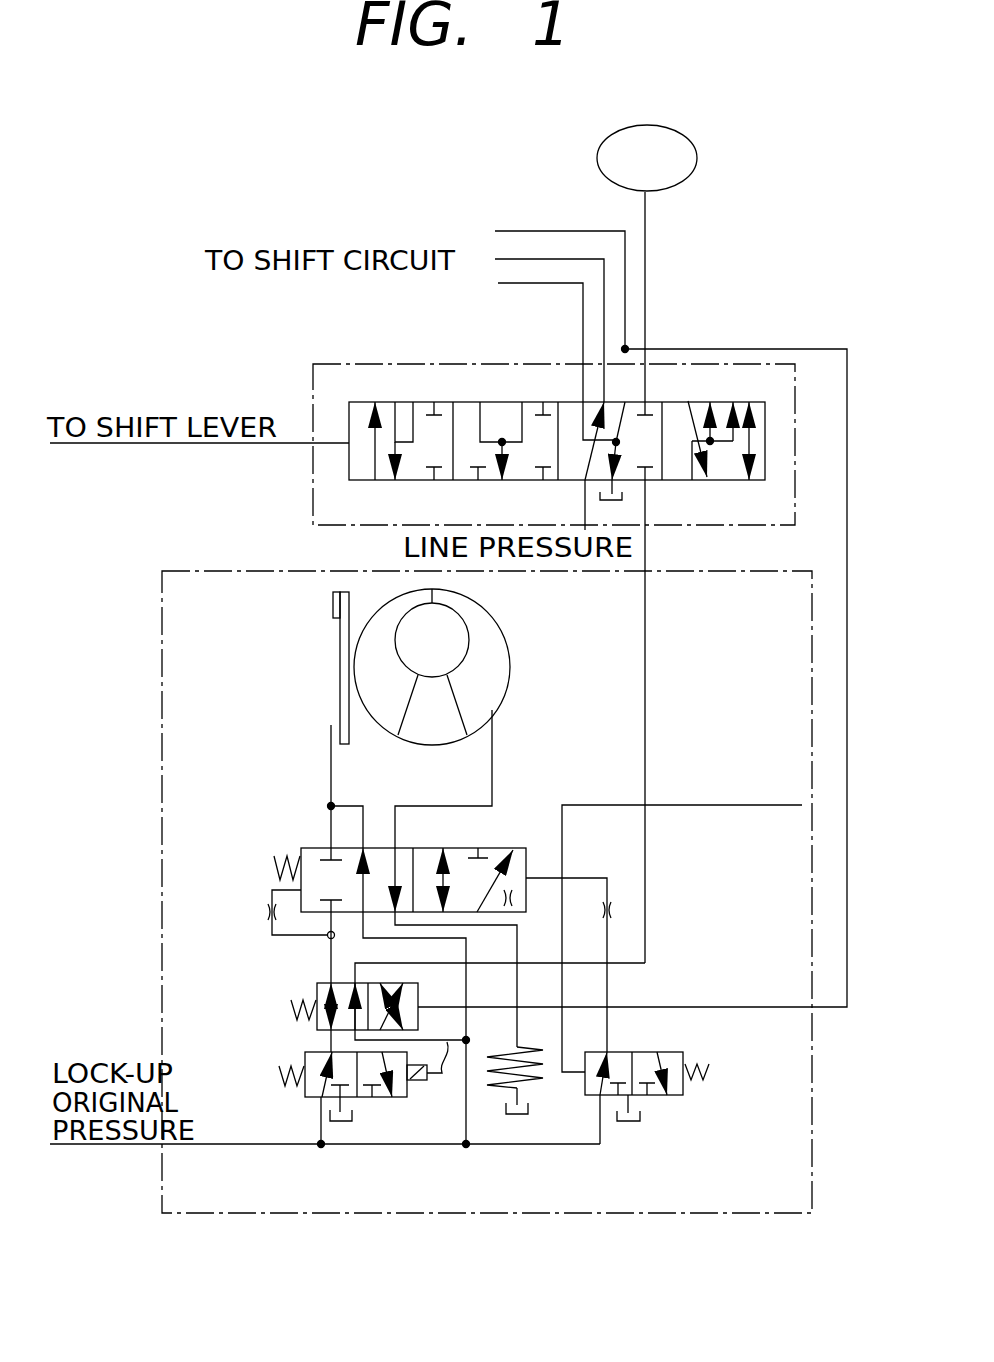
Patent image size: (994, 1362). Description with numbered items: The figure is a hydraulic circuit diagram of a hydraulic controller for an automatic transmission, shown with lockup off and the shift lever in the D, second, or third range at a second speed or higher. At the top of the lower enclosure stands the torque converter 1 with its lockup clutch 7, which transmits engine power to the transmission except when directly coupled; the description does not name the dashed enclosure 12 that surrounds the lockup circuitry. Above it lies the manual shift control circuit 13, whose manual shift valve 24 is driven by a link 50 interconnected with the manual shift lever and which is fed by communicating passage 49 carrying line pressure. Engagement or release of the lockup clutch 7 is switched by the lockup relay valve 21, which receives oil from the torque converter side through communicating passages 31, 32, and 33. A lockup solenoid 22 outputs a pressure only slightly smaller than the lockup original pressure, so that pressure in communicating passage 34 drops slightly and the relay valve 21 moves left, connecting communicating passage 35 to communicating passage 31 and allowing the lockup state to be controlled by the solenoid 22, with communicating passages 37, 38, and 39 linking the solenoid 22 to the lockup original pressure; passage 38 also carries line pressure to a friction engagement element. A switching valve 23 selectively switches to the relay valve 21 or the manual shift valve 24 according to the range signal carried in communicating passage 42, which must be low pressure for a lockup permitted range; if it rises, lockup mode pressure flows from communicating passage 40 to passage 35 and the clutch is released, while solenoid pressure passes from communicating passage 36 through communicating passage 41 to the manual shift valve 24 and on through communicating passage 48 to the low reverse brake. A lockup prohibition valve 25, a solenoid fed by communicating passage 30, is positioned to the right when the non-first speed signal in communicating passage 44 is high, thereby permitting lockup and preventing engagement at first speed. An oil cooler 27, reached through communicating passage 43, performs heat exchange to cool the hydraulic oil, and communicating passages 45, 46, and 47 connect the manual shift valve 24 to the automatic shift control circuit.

The torque converter 1 is at (397, 607).
The lockup clutch 7 is at (333, 603).
The hydraulic control valve body 12 is at (812, 1210).
The manual shift control circuit 13 is at (795, 500).
The lockup relay valve 21 is at (301, 850).
The lockup solenoid 22 is at (305, 1062).
The switching valve 23 is at (317, 988).
The manual shift valve 24 is at (735, 480).
The lockup prohibition valve 25 is at (683, 1052).
The oil cooler 27 is at (538, 1085).
The communicating passage 30 is at (608, 993).
The communicating passage 31 is at (331, 784).
The communicating passage 32 is at (363, 806).
The communicating passage 33 is at (492, 793).
The communicating passage 34 is at (268, 917).
The communicating passage 35 is at (331, 957).
The communicating passage 36 is at (328, 1040).
The communicating passage 37 is at (318, 1125).
The communicating passage 38 is at (258, 1145).
The communicating passage 39 is at (466, 1115).
The communicating passage 40 is at (440, 1080).
The communicating passage 41 is at (390, 962).
The communicating passage 42 is at (437, 1007).
The communicating passage 43 is at (517, 1000).
The communicating passage 44 is at (565, 1046).
The communicating passage 45 is at (583, 349).
The communicating passage 46 is at (604, 315).
The communicating passage 47 is at (538, 231).
The communicating passage 48 is at (645, 278).
The communicating passage 49 is at (585, 512).
The link 50 is at (253, 443).